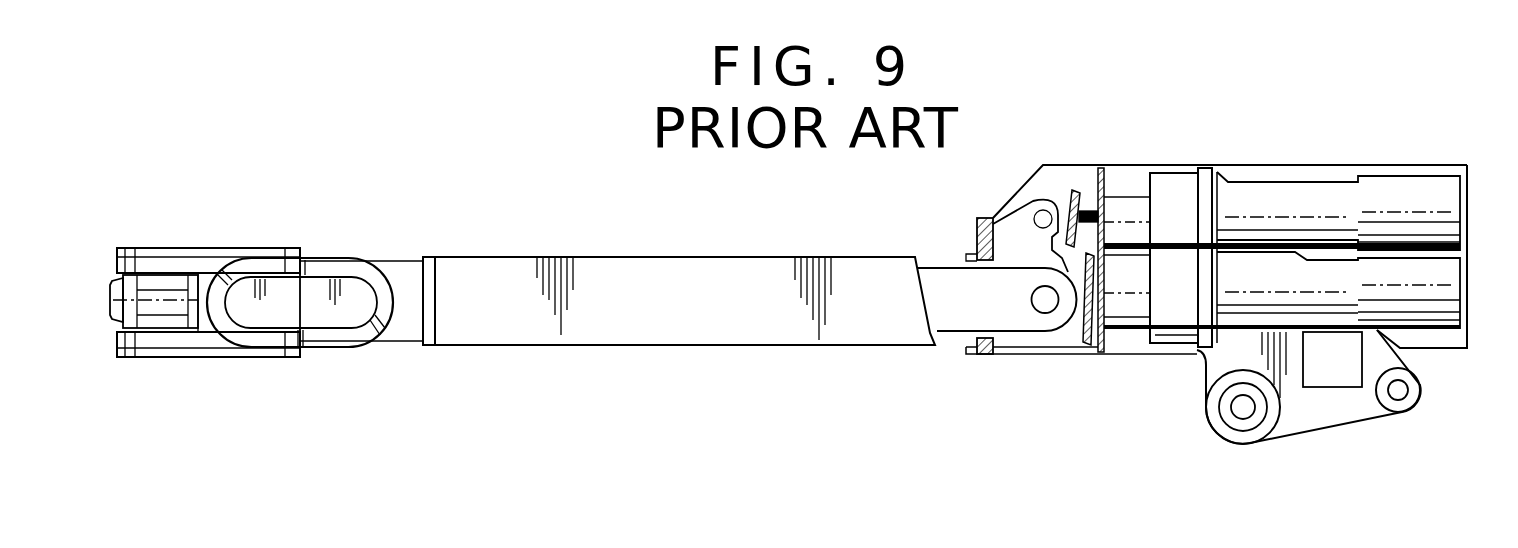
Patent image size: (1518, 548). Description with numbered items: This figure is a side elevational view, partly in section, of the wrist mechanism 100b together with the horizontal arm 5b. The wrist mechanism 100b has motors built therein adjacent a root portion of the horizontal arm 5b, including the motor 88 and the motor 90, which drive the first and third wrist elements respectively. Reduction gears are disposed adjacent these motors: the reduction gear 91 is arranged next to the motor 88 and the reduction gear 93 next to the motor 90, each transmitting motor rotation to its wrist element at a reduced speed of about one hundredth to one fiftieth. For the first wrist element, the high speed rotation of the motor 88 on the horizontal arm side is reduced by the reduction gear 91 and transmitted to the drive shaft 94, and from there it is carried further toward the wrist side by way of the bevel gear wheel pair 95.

The wrist mechanism 100b is at (356, 247).
The horizontal arm 5b is at (705, 257).
The reduction gear 93 is at (1180, 185).
The motor 90 is at (1325, 195).
The motor 88 is at (1345, 278).
The bevel gear wheel pair 95 is at (1076, 343).
The drive shaft 94 is at (1130, 325).
The reduction gear 91 is at (1178, 325).